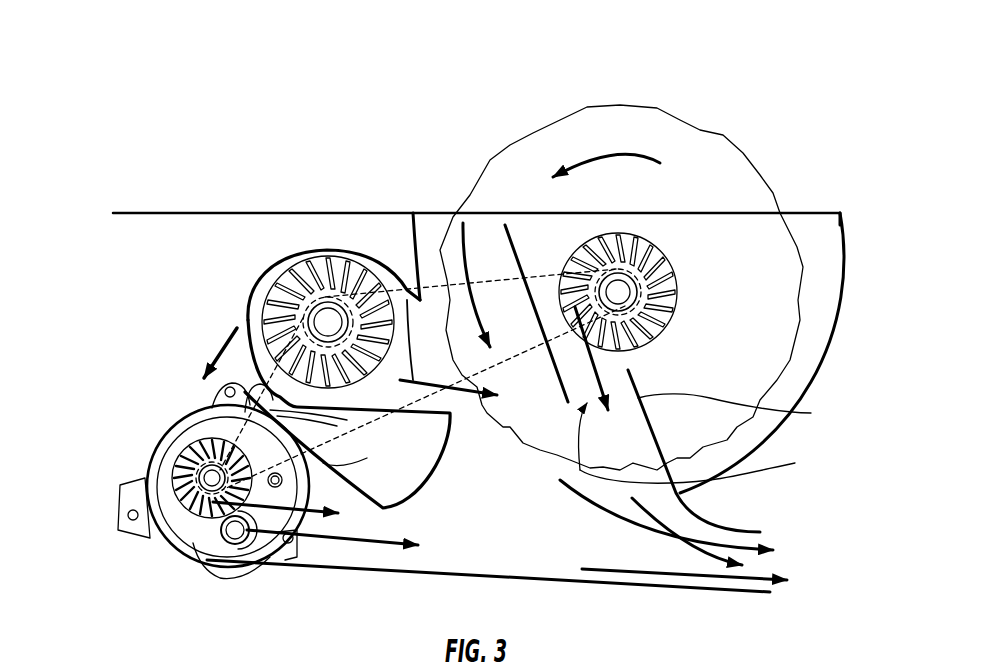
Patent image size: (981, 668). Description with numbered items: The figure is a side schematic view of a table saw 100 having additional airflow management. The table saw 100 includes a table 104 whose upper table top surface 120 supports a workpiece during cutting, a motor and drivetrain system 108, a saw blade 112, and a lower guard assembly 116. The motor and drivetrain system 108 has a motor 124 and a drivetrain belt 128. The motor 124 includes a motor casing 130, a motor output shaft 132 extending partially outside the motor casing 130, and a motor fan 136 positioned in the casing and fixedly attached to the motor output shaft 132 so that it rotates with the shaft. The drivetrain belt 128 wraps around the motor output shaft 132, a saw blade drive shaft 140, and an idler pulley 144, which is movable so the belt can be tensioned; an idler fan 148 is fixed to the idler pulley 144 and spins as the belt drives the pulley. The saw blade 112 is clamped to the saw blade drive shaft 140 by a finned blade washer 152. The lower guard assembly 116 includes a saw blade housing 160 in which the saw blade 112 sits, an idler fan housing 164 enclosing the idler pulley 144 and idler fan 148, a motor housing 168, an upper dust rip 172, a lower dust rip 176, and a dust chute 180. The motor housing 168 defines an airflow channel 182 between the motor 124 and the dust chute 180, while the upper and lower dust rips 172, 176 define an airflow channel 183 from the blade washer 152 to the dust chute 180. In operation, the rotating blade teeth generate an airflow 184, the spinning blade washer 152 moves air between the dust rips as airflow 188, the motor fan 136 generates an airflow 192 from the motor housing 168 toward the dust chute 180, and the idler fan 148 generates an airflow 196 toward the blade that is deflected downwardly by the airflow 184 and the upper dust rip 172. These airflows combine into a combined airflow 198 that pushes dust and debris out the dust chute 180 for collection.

The table saw 100 is at (731, 53).
The table 104 is at (233, 212).
The motor and drivetrain system 108 is at (183, 349).
The saw blade 112 is at (723, 180).
The lower guard assembly 116 is at (412, 600).
The upper table top surface 120 is at (312, 208).
The motor 124 is at (150, 425).
The drivetrain belt 128 is at (287, 330).
The motor casing 130 is at (220, 578).
The motor output shaft 132 is at (212, 478).
The motor fan 136 is at (196, 542).
The saw blade drive shaft 140 is at (622, 294).
The idler pulley 144 is at (310, 295).
The idler fan 148 is at (327, 270).
The blade washer 152 is at (640, 267).
The saw blade housing 160 is at (830, 352).
The idler fan housing 164 is at (272, 270).
The motor housing 168 is at (163, 535).
The upper dust rip 172 is at (505, 262).
The lower dust rip 176 is at (739, 410).
The dust chute 180 is at (742, 530).
The airflow channel 182 is at (440, 533).
The airflow channel 183 is at (522, 405).
The airflow from saw blade 184 is at (458, 250).
The airflow from blade washer 188 is at (598, 375).
The airflow from motor fan 192 is at (290, 560).
The airflow from idler fan 196 is at (407, 277).
The combined airflow 198 is at (703, 565).